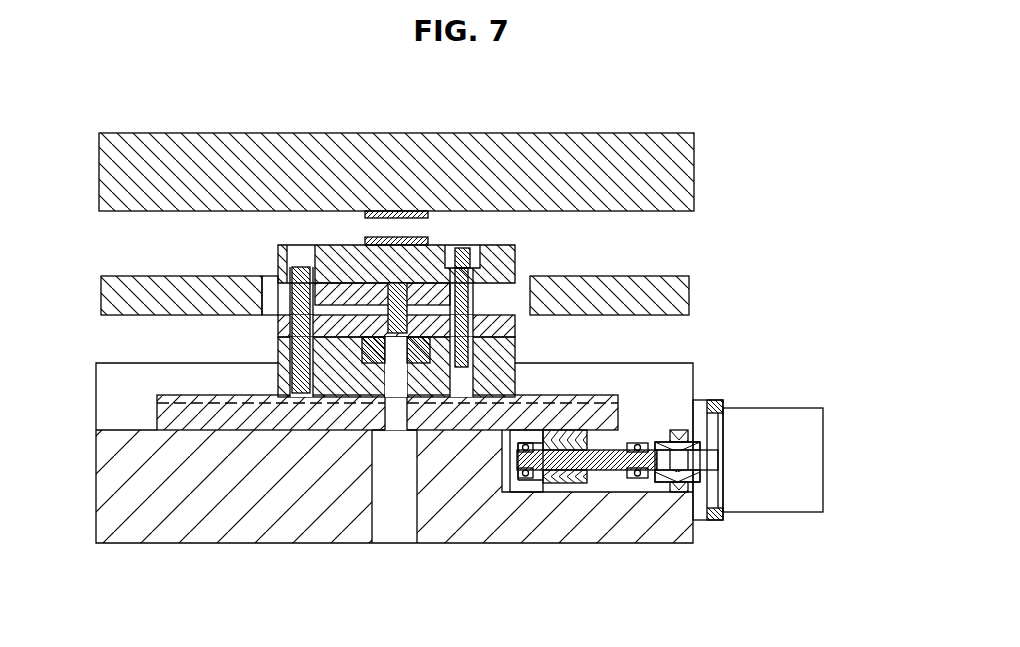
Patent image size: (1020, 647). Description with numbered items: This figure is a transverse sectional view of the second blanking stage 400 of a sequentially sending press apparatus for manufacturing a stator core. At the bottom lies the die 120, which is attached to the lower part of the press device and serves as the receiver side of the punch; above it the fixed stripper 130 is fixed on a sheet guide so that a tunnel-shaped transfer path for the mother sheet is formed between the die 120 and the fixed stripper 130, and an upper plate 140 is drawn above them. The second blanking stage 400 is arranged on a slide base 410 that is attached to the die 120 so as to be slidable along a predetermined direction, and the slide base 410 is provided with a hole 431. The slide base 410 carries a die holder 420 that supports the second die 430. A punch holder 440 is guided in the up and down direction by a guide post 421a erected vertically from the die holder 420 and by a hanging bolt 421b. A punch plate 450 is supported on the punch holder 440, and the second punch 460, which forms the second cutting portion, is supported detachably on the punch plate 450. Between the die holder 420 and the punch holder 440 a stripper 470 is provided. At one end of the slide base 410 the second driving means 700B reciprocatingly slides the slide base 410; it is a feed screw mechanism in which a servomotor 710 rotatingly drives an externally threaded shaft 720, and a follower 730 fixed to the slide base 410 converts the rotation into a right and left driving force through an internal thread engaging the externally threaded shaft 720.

The upper plate 140 is at (694, 172).
The fixed stripper 130 is at (689, 294).
The die 120 is at (96, 464).
The slide base 410 is at (157, 410).
The hole 431 is at (398, 431).
The second blanking stage 400 is at (426, 344).
The punch holder 440 is at (515, 265).
The punch plate 450 is at (348, 300).
The stripper 470 is at (515, 327).
The die holder 420 is at (277, 372).
The second die 430 is at (372, 365).
The second punch 460 is at (394, 283).
The guide post 421a is at (293, 350).
The hanging bolt 421b is at (473, 296).
The follower 730 is at (562, 486).
The externally threaded shaft 720 is at (600, 472).
The second driving means 700B is at (765, 388).
The servomotor 710 is at (769, 512).